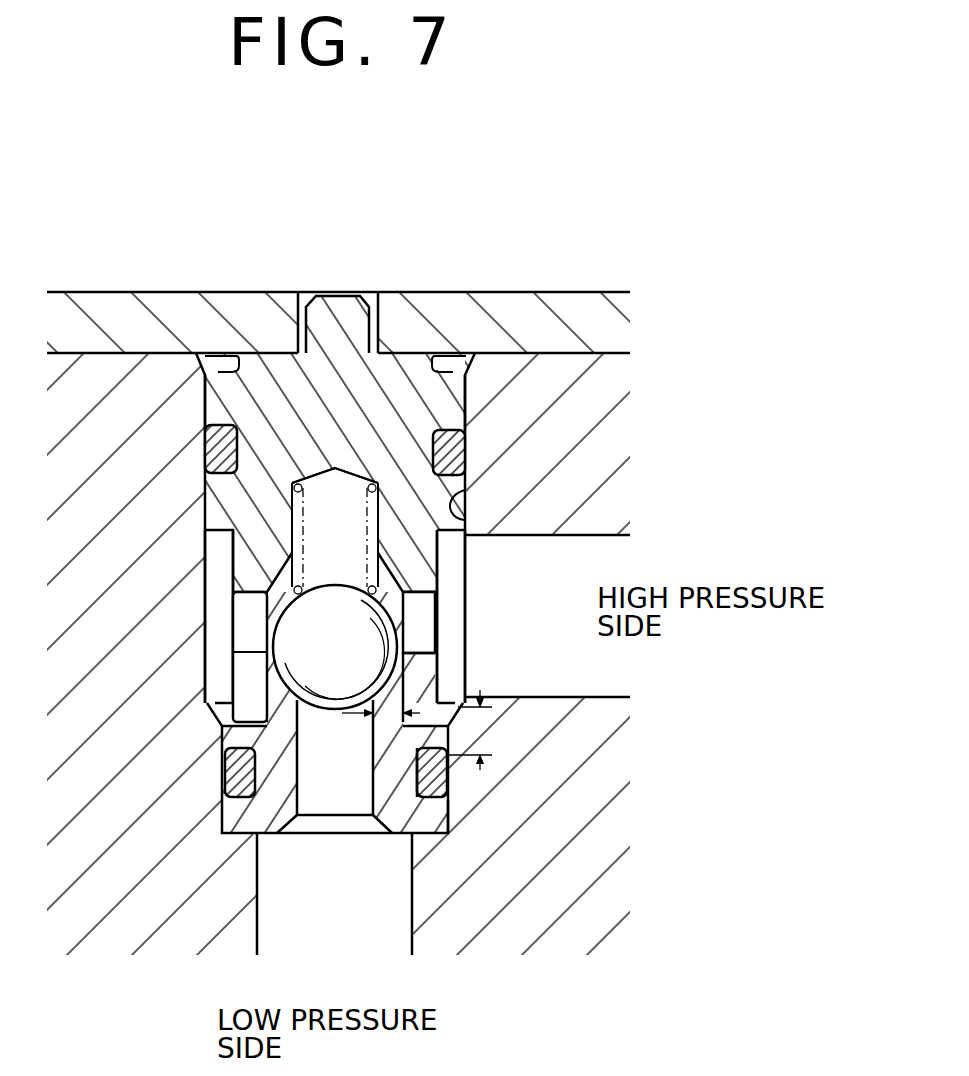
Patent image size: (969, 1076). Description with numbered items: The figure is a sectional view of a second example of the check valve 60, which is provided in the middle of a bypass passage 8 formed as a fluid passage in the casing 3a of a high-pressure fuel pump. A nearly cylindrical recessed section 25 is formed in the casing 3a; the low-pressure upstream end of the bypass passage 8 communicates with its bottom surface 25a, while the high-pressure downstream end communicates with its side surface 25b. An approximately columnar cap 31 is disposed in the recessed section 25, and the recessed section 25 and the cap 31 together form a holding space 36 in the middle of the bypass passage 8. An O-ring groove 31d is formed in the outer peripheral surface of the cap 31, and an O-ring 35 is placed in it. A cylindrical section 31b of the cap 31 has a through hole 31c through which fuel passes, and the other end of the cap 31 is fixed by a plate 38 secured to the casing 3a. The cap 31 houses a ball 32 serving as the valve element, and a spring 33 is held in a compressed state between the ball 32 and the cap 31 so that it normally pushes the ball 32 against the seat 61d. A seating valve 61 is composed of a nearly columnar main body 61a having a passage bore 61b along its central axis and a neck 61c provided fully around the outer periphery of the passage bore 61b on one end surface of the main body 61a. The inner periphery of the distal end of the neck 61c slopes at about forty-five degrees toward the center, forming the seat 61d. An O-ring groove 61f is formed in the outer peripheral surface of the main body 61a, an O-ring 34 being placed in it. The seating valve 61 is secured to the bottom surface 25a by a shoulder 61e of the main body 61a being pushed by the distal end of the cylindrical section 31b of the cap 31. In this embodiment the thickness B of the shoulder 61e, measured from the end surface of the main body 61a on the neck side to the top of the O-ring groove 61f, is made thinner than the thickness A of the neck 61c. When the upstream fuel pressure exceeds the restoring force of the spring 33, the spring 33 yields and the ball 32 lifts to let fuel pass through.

The casing 3a is at (603, 393).
The plate 38 is at (462, 292).
The bypass passage 8 is at (597, 677).
The cap 31 is at (233, 497).
The check valve 60 is at (330, 295).
The recessed section 25 is at (228, 386).
The ball 32 is at (333, 582).
The spring 33 is at (326, 490).
The O-ring 35 is at (467, 452).
The O-ring groove 31d is at (470, 443).
The side surface 25b is at (470, 490).
The holding space 36 is at (206, 622).
The cylindrical section 31b is at (440, 556).
The through hole 31c is at (435, 612).
The seating valve 61 is at (403, 840).
The seat 61d is at (288, 683).
The neck 61c is at (268, 690).
The shoulder 61e is at (440, 692).
The passage bore 61b is at (362, 800).
The main body 61a is at (447, 820).
The O-ring 34 is at (448, 780).
The bottom surface 25a is at (228, 818).
The O-ring groove 61f is at (417, 775).
The thickness of the neck A is at (374, 733).
The thickness of the shoulder B is at (479, 730).